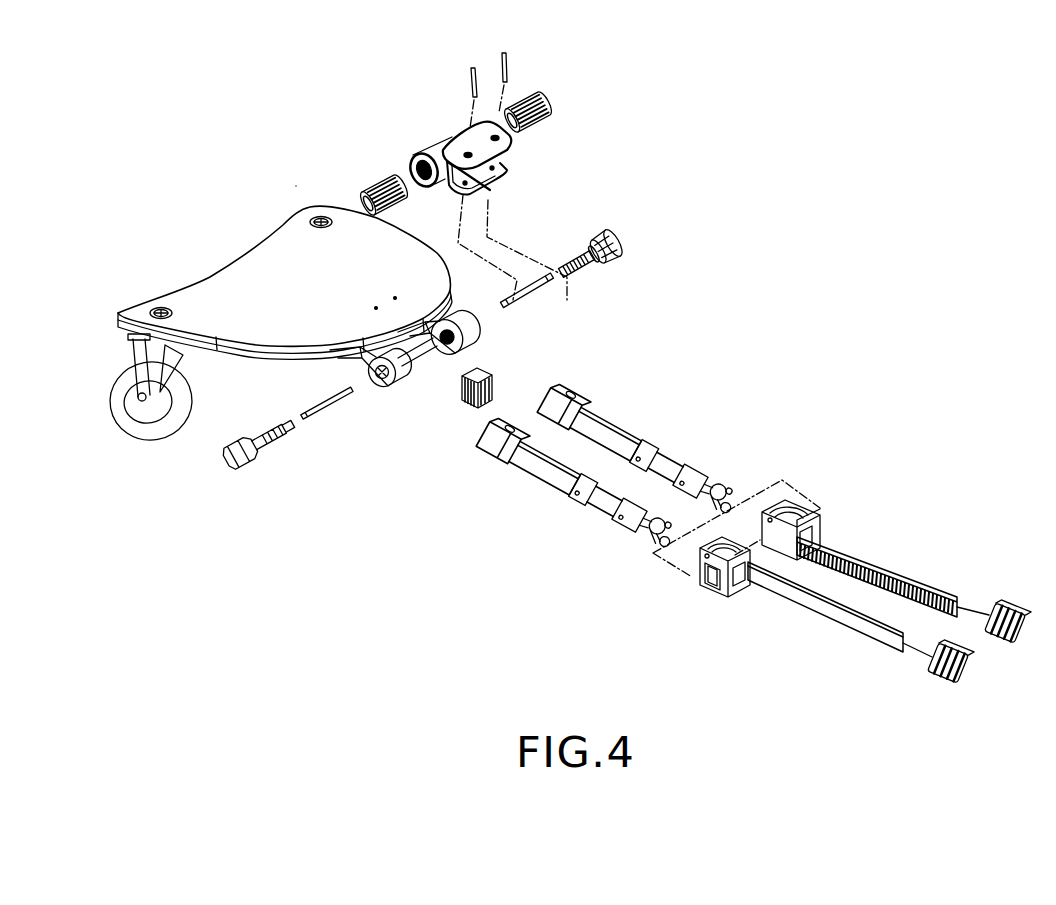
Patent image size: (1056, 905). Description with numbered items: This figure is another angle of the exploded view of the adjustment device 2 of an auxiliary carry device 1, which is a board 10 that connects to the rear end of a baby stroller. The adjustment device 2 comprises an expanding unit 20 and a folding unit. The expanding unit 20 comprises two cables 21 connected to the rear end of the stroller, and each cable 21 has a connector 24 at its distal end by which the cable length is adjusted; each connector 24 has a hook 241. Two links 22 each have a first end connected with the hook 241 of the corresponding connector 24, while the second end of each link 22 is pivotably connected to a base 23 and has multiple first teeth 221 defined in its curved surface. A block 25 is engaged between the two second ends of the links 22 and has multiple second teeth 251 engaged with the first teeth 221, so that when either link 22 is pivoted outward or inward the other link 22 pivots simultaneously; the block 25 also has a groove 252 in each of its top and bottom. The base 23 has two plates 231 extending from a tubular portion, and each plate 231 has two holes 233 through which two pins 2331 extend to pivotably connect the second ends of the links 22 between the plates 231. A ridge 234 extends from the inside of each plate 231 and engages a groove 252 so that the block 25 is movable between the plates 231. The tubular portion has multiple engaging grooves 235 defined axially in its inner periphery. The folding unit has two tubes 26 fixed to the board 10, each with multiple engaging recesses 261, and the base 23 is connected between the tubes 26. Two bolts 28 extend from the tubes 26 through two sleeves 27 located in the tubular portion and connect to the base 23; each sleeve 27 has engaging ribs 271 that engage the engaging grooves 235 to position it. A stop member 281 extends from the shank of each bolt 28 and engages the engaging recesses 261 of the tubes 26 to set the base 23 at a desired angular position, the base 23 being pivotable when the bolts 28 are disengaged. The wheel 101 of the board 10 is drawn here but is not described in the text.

The auxiliary carry device 1 is at (307, 177).
The board 10 is at (253, 280).
The wheel 101 is at (158, 437).
The adjustment device 2 is at (552, 585).
The expanding unit 20 is at (668, 402).
The cable 21 is at (863, 627).
The link 22 is at (553, 468).
The first teeth 221 is at (535, 400).
The base 23 is at (477, 145).
The plate 231 is at (518, 143).
The hole 233 is at (510, 137).
The pin 2331 is at (510, 62).
The ridge 234 is at (510, 178).
The engaging groove 235 is at (415, 158).
The connector 24 is at (812, 498).
The hook 241 is at (653, 533).
The block 25 is at (470, 405).
The second teeth 251 is at (460, 400).
The groove 252 is at (505, 420).
The tube 26 is at (407, 373).
The engaging recess 261 is at (385, 387).
The sleeve 27 is at (545, 98).
The engaging rib 271 is at (528, 112).
The bolt 28 is at (612, 240).
The stop member 281 is at (582, 245).